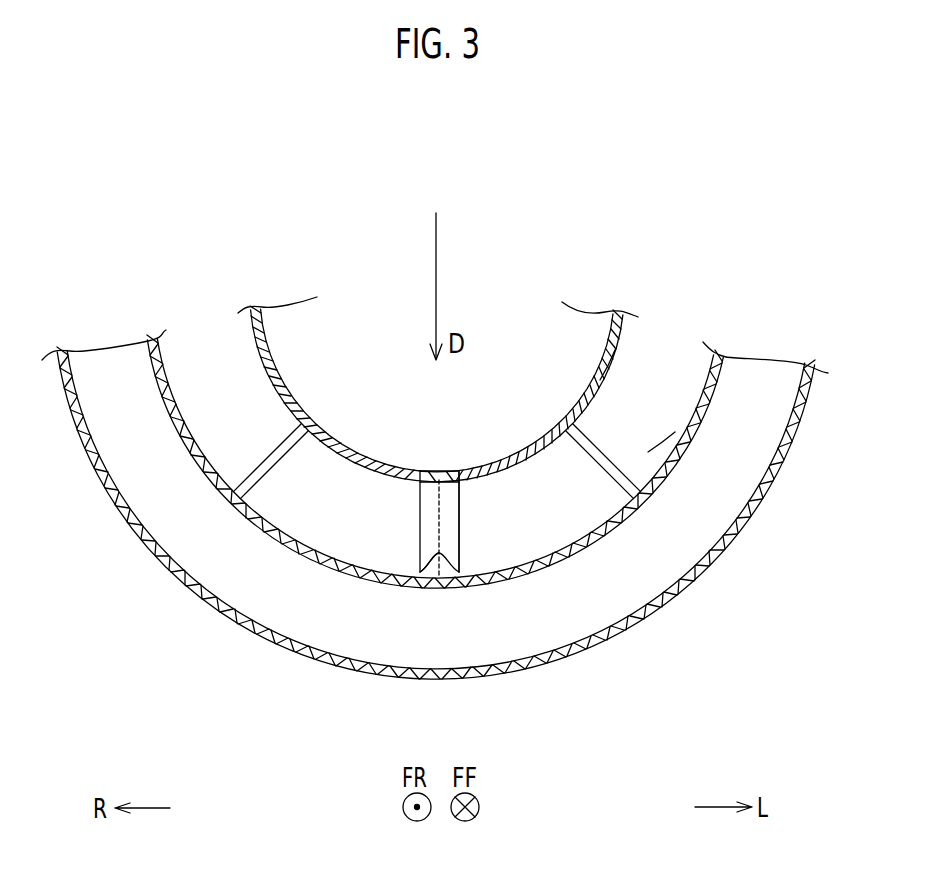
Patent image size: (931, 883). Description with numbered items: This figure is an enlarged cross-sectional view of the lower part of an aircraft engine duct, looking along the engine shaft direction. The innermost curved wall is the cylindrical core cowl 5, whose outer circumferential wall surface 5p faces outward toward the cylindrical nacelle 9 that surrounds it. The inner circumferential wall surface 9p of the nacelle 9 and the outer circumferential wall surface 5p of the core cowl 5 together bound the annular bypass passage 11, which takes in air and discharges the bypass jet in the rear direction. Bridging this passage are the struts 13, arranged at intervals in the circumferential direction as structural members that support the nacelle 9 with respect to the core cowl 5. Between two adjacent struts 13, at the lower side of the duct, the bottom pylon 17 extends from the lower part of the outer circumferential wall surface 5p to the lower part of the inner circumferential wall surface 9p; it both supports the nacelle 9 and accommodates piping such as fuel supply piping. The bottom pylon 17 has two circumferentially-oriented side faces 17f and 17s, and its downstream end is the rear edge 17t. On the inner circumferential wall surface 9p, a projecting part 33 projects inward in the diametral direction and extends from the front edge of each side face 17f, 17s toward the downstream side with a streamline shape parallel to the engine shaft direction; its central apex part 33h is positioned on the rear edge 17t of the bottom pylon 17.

The core cowl 5 is at (260, 352).
The outer circumferential wall surface of the core cowl 5p is at (612, 372).
The nacelle 9 is at (270, 641).
The inner circumferential wall surface of the nacelle 9p is at (660, 455).
The bypass passage 11 is at (673, 423).
The strut 13 is at (278, 446).
The bottom pylon 17 is at (458, 519).
The circumferentially-oriented side face of the bottom pylon 17f is at (430, 477).
The circumferentially-oriented side face of the bottom pylon 17s is at (448, 478).
The rear edge of the bottom pylon 17t is at (437, 512).
The projecting part 33 is at (458, 566).
The apex part 33h is at (430, 547).